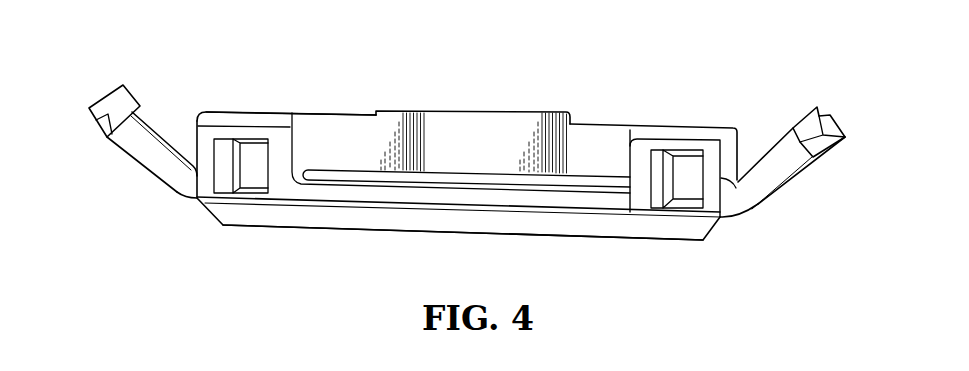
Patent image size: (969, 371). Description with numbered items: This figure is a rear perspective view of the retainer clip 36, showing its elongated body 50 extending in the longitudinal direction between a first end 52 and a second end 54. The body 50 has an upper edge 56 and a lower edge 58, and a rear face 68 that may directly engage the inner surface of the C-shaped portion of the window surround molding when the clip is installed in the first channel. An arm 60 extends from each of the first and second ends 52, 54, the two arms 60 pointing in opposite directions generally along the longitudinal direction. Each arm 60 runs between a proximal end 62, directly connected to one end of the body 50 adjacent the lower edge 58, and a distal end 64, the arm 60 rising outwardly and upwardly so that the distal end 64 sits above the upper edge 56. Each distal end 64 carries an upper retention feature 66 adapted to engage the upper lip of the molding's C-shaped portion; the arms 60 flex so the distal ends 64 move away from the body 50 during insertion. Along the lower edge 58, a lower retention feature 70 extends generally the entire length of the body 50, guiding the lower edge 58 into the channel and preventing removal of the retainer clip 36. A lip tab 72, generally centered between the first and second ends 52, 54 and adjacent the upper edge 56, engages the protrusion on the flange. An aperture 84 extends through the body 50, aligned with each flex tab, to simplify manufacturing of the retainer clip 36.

The retainer clip 36 is at (598, 122).
The elongated body 50 is at (462, 195).
The first end 52 is at (740, 145).
The second end 54 is at (192, 127).
The upper edge 56 is at (332, 117).
The lower edge 58 is at (587, 215).
The arm 60 is at (155, 160).
The proximal end 62 is at (192, 190).
The distal end 64 is at (92, 108).
The upper retention feature 66 is at (126, 85).
The rear face 68 is at (417, 195).
The lower retention feature 70 is at (297, 215).
The lip tab 72 is at (545, 115).
The aperture 84 is at (242, 197).